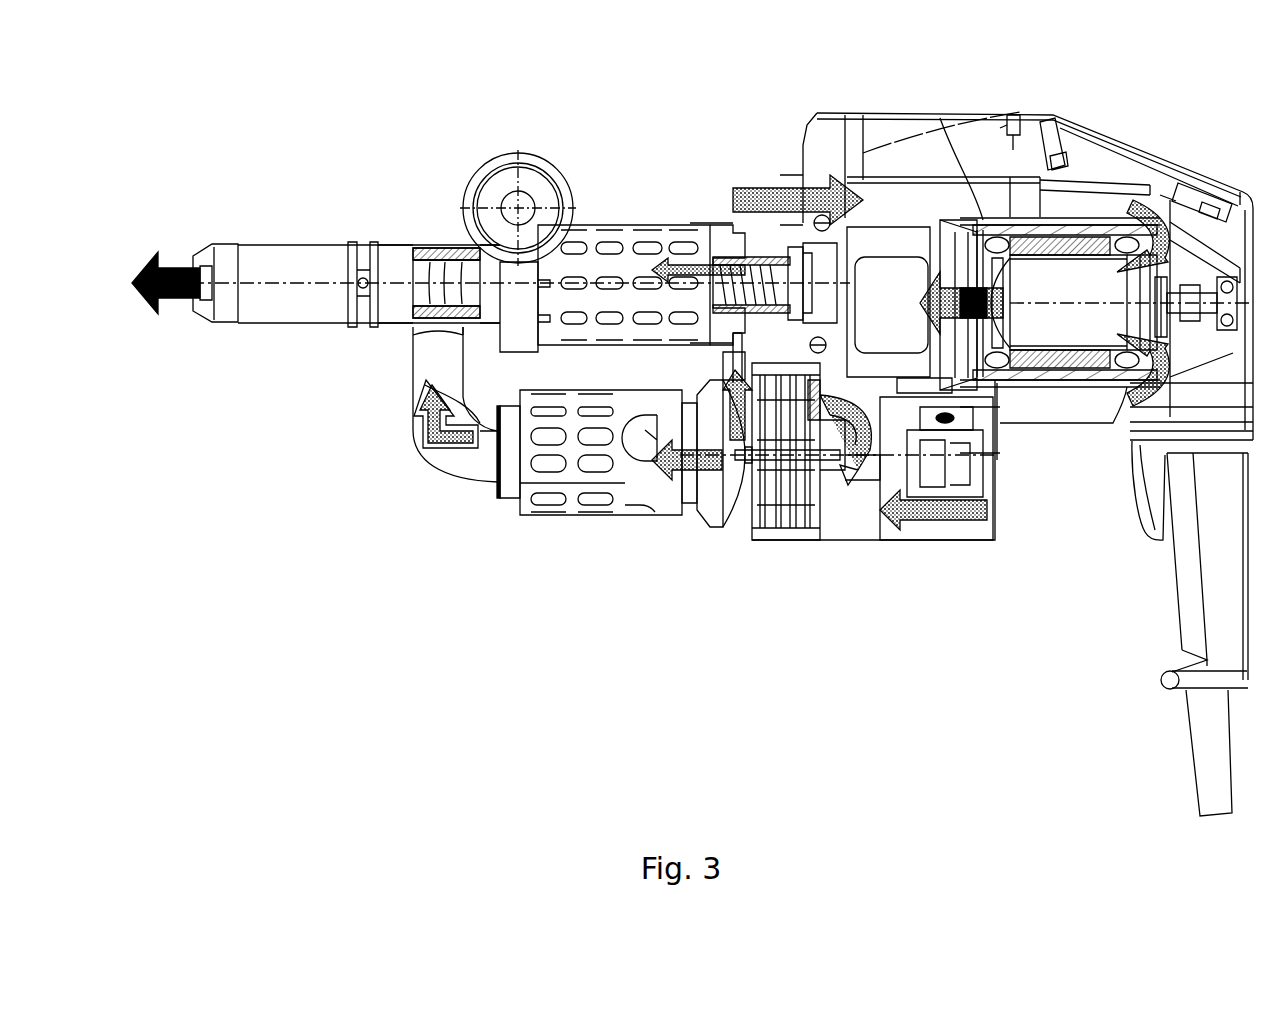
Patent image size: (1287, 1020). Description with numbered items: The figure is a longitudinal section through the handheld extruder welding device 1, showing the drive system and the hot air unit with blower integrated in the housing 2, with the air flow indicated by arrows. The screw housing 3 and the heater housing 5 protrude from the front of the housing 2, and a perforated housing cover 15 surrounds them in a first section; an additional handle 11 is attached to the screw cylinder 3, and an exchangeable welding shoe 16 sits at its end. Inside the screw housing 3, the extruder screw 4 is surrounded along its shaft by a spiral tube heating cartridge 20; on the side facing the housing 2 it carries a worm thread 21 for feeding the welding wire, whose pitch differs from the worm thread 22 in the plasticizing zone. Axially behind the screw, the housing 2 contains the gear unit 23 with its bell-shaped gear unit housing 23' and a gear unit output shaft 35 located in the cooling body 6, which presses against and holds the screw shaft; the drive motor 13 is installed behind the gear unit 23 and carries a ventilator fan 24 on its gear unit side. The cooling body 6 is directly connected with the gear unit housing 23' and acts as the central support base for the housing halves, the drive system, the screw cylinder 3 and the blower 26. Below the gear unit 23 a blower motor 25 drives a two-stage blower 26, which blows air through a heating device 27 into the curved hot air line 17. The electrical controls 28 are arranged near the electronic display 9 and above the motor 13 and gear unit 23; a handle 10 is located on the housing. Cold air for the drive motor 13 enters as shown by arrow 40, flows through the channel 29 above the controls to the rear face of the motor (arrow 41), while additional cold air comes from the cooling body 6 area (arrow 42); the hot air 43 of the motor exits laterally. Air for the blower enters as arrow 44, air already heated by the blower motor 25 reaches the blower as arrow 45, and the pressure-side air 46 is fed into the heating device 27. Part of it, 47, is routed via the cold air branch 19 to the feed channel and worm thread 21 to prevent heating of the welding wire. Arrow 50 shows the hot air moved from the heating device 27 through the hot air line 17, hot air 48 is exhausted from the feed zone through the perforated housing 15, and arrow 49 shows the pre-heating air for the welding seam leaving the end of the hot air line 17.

The handheld extruder welding device 1 is at (436, 517).
The housing 2 is at (917, 113).
The screw housing 3 is at (307, 262).
The extruder screw 4 is at (428, 263).
The heater housing 5 is at (565, 507).
The cooling body 6 is at (802, 170).
The electronic display 9 is at (1223, 187).
The handle 10 is at (1193, 635).
The additional handle 11 is at (512, 165).
The drive motor 13 is at (1090, 257).
The perforated housing cover 15 is at (610, 240).
The welding shoe 16 is at (223, 262).
The hot air line 17 is at (425, 368).
The cold air branch 19 is at (717, 360).
The spiral tube heating cartridge 20 is at (455, 257).
The worm thread 21 is at (730, 223).
The worm thread 22 is at (435, 255).
The gear unit 23 is at (870, 193).
The gear unit housing 23' is at (891, 209).
The ventilator fan 24 is at (967, 240).
The blower motor 25 is at (933, 480).
The two-stage blower 26 is at (790, 517).
The heating device 27 is at (641, 507).
The electrical controls 28 is at (1047, 200).
The channel 29 is at (1013, 135).
The gear unit output shaft 35 is at (825, 257).
The arrow 40 is at (762, 197).
The arrow 41 is at (1160, 207).
The arrow 42 is at (1114, 430).
The hot air 43 is at (1000, 395).
The arrow 44 is at (827, 497).
The arrow 45 is at (965, 517).
The air 46 is at (682, 514).
The air 47 is at (731, 500).
The hot air 48 is at (670, 262).
The arrow 49 is at (170, 292).
The arrow 50 is at (437, 440).